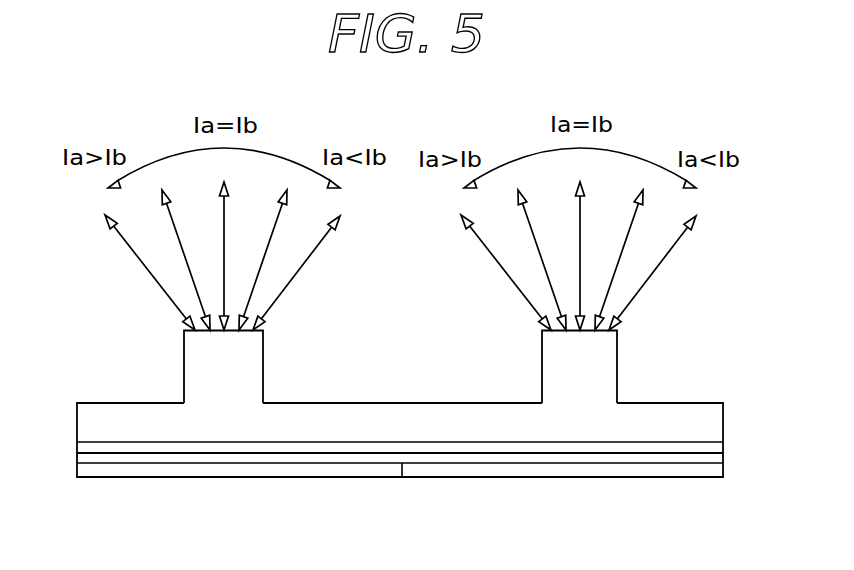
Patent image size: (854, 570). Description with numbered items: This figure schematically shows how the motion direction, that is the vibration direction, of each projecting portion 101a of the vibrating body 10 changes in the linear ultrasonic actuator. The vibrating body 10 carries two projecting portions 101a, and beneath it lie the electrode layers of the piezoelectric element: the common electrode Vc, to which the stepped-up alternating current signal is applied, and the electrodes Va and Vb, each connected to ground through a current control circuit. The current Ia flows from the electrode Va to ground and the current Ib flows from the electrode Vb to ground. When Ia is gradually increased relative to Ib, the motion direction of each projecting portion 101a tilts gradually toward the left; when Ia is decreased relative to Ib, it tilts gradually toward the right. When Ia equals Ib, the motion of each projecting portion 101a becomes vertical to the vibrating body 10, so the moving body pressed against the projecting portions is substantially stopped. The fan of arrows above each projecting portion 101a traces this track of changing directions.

The vibrating body 10 is at (673, 403).
The projecting portion 101a is at (250, 371).
The electrode Va is at (400, 483).
The electrode Vb is at (562, 487).
The common electrode Vc is at (400, 427).